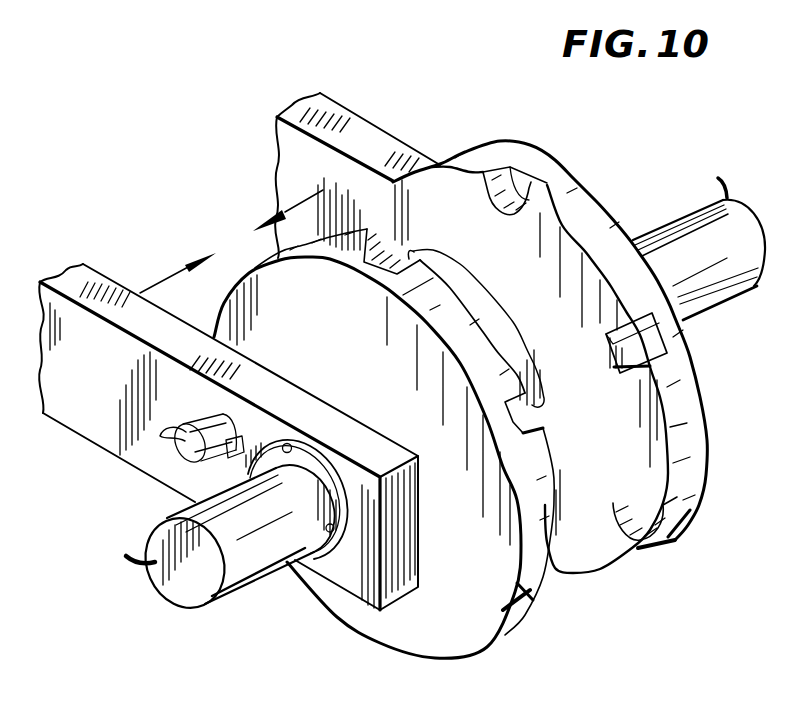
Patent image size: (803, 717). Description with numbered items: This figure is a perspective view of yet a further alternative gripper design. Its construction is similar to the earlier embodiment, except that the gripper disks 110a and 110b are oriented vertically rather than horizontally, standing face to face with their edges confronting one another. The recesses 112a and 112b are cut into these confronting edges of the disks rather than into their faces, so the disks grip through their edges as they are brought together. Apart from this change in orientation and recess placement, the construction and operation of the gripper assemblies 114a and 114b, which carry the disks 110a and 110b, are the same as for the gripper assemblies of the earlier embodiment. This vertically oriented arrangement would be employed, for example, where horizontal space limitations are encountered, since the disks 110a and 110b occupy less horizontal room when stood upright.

The gripper disk 110a is at (413, 632).
The gripper disk 110b is at (695, 487).
The recess 112a is at (476, 328).
The recess 112b is at (613, 373).
The gripper assembly 114a is at (314, 620).
The gripper assembly 114b is at (614, 188).